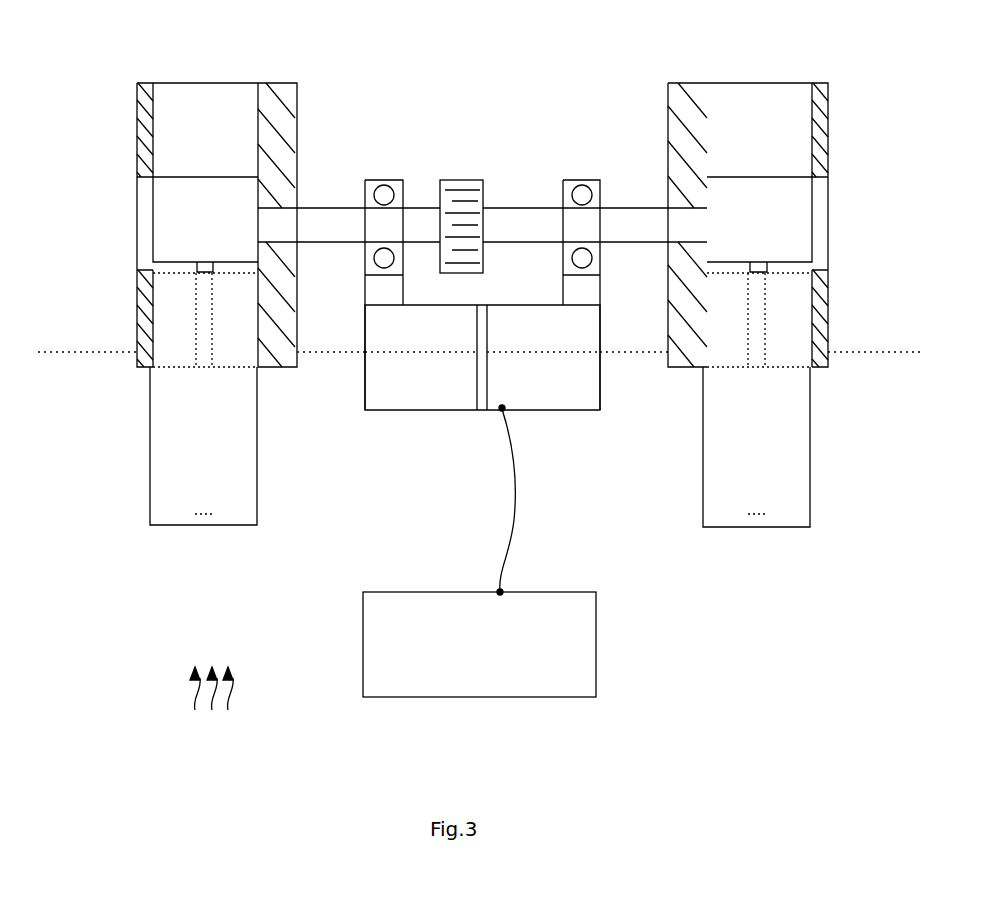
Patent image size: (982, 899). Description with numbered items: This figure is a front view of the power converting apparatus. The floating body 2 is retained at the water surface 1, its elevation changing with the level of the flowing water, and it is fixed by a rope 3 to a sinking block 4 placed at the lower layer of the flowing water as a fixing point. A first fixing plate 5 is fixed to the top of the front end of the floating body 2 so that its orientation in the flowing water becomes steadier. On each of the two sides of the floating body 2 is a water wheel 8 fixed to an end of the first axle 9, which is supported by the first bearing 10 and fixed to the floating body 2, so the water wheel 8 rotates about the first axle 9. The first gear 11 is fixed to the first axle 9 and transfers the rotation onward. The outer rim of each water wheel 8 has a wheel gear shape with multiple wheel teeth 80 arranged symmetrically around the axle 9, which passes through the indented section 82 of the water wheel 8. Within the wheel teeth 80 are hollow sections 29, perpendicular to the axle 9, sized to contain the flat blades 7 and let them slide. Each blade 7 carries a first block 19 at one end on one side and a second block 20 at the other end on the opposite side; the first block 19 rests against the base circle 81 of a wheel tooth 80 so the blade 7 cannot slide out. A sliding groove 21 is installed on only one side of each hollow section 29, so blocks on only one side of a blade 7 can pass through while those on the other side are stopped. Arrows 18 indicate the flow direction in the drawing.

The water surface 1 is at (65, 350).
The floating body 2 is at (390, 412).
The rope 3 is at (515, 533).
The sinking block 4 is at (592, 643).
The first fixing plate 5 is at (477, 375).
The blades 7 is at (158, 437).
The water wheel 8 is at (108, 82).
The first axle 9 is at (335, 208).
The first bearing 10 is at (395, 180).
The first gear 11 is at (463, 180).
The flow direction 18 is at (211, 706).
The first block 19 is at (203, 262).
The second block 20 is at (202, 528).
The sliding groove 21 is at (205, 370).
The hollow section 29 is at (200, 83).
The wheel teeth 80 is at (137, 124).
The base circle 81 is at (182, 275).
The indented section 82 is at (163, 232).